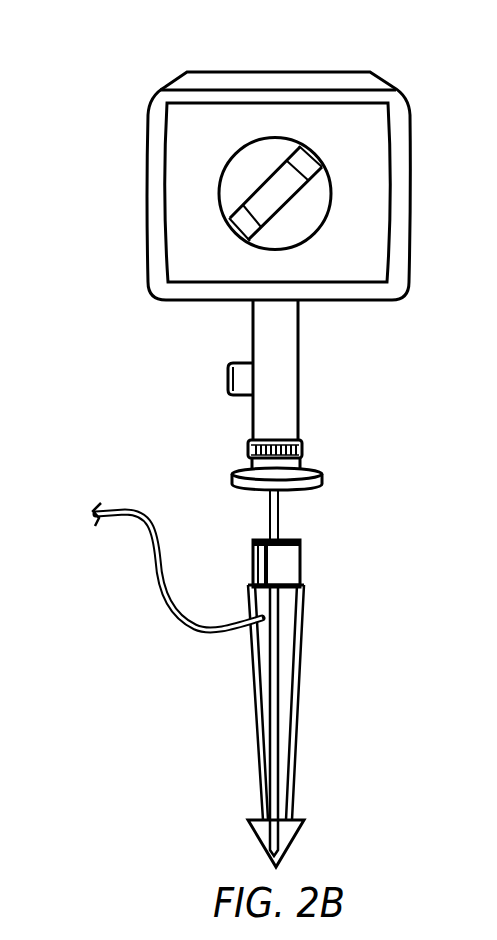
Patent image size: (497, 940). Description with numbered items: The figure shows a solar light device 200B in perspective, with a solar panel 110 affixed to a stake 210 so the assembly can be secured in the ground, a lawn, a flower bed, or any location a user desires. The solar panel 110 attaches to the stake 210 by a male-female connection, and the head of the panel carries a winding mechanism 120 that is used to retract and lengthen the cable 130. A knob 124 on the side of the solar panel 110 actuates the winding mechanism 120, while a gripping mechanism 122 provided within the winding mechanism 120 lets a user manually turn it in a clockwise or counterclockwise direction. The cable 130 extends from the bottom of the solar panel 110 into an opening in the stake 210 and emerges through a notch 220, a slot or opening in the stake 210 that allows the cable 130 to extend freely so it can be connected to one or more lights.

The solar light device 200B is at (121, 44).
The solar panel 110 is at (150, 130).
The winding mechanism 120 is at (317, 233).
The gripping mechanism 122 is at (272, 193).
The knob 124 is at (228, 377).
The cable 130 is at (147, 578).
The stake 210 is at (298, 710).
The notch 220 is at (248, 586).